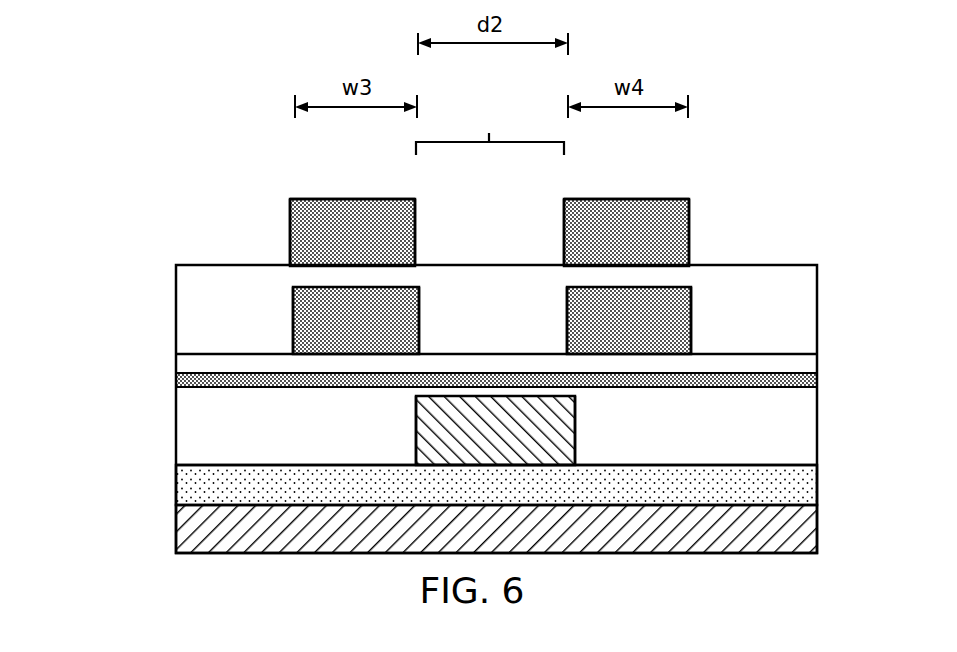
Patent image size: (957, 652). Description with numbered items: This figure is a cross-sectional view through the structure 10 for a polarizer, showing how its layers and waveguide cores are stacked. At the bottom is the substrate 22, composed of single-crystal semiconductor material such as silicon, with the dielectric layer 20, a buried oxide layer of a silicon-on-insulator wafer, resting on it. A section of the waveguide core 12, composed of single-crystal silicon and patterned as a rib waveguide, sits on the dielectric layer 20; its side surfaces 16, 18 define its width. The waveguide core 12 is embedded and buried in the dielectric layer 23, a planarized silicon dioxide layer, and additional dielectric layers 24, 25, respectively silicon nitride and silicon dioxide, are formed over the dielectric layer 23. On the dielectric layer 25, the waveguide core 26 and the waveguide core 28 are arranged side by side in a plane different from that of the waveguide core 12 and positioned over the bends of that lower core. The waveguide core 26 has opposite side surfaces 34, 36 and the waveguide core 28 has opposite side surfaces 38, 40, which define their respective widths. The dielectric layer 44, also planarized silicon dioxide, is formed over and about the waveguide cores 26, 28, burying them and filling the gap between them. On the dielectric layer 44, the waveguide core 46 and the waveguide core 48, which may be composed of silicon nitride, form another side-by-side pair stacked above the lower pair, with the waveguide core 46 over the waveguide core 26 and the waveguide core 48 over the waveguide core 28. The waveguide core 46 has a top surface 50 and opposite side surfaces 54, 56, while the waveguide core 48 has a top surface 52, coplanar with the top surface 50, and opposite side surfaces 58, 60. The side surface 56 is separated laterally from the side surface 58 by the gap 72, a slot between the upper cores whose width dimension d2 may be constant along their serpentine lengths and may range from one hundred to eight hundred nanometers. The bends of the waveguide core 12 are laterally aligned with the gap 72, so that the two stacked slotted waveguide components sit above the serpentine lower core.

The structure 10 is at (118, 150).
The waveguide core 12 is at (540, 414).
The side surface 16 is at (416, 431).
The side surface 18 is at (575, 443).
The dielectric layer 20 is at (205, 492).
The substrate 22 is at (205, 540).
The dielectric layer 23 is at (195, 421).
The dielectric layer 24 is at (800, 382).
The dielectric layer 25 is at (195, 368).
The waveguide core 26 is at (325, 313).
The waveguide core 28 is at (660, 318).
The side surface 34 is at (293, 340).
The side surface 36 is at (419, 340).
The side surface 38 is at (567, 313).
The side surface 40 is at (691, 342).
The dielectric layer 44 is at (192, 285).
The waveguide core 46 is at (323, 227).
The waveguide core 48 is at (659, 231).
The top surface 50 is at (355, 199).
The top surface 52 is at (634, 199).
The side surface 54 is at (290, 252).
The side surface 56 is at (417, 251).
The side surface 58 is at (564, 222).
The side surface 60 is at (689, 258).
The gap 72 is at (490, 131).